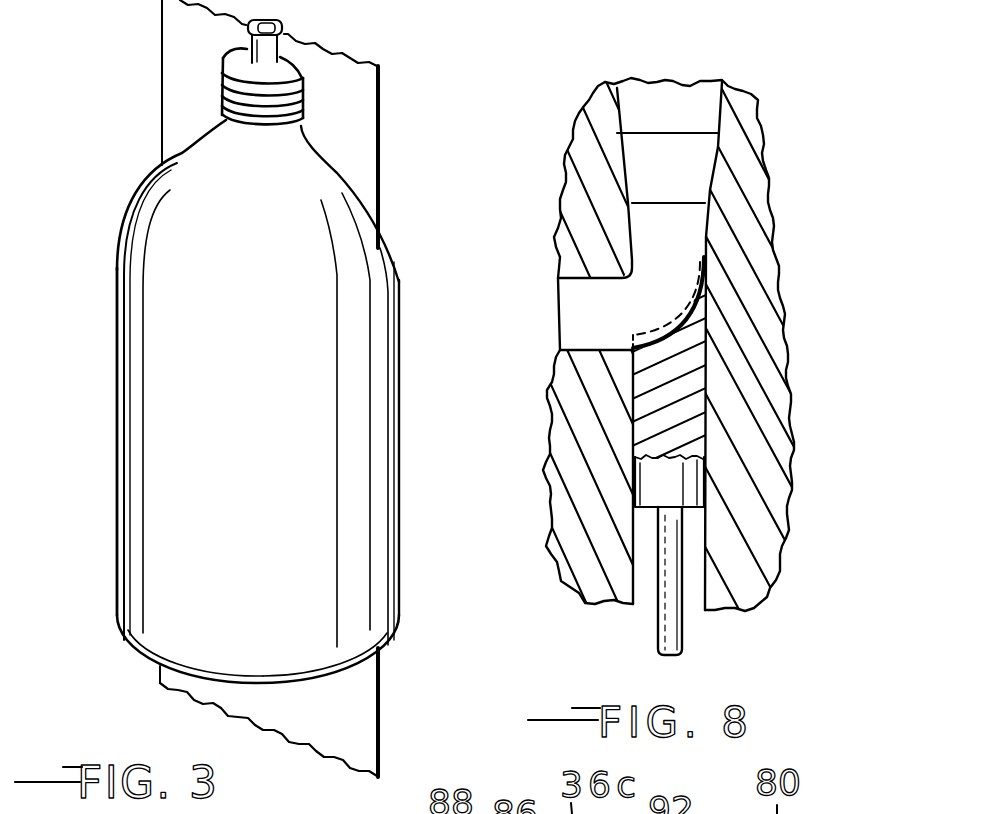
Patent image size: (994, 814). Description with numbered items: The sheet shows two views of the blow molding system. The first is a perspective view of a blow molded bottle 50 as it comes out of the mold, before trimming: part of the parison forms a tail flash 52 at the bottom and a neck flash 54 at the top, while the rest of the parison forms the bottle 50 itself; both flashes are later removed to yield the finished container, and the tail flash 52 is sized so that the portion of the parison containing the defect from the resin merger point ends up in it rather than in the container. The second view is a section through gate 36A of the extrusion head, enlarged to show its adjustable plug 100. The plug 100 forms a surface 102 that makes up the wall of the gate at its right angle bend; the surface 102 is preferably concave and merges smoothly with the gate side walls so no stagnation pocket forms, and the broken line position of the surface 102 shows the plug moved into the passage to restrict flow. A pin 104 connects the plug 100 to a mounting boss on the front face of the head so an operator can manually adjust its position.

In FIG. 3, the blow molded bottle 50 is at (401, 307).
In FIG. 3, the tail flash 52 is at (382, 687).
In FIG. 3, the neck flash 54 is at (362, 105).
In FIG. 8, the gate 36A is at (706, 235).
In FIG. 8, the adjustable plug 100 is at (690, 397).
In FIG. 8, the surface 102 is at (668, 313).
In FIG. 8, the pin 104 is at (655, 597).